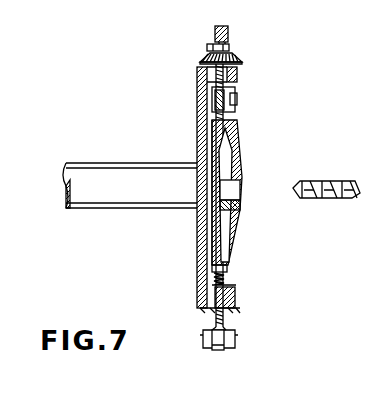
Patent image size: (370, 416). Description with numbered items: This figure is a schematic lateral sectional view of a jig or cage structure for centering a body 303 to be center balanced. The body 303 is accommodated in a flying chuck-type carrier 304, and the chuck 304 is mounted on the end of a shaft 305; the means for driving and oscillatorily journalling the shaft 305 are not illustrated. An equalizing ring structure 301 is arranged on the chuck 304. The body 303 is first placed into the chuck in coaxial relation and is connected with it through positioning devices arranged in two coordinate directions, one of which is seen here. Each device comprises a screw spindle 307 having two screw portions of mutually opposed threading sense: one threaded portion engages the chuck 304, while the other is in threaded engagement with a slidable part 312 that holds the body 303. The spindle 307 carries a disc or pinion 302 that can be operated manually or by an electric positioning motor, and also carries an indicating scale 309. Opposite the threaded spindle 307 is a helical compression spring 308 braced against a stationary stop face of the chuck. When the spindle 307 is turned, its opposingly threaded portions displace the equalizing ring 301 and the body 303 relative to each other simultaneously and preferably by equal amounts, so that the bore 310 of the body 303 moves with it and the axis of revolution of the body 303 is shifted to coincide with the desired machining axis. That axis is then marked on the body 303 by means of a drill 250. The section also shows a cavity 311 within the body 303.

The drill 250 is at (330, 181).
The equalizing ring structure 301 is at (227, 27).
The disc or pinion 302 is at (229, 47).
The body 303 is at (238, 158).
The flying chuck-type carrier 304 is at (197, 99).
The shaft 305 is at (150, 163).
The screw spindle 307 is at (224, 67).
The helical compression spring 308 is at (227, 279).
The indicating scale 309 is at (236, 59).
The bore 310 is at (240, 188).
The cavity 311 is at (229, 162).
The slidable part 312 is at (212, 111).